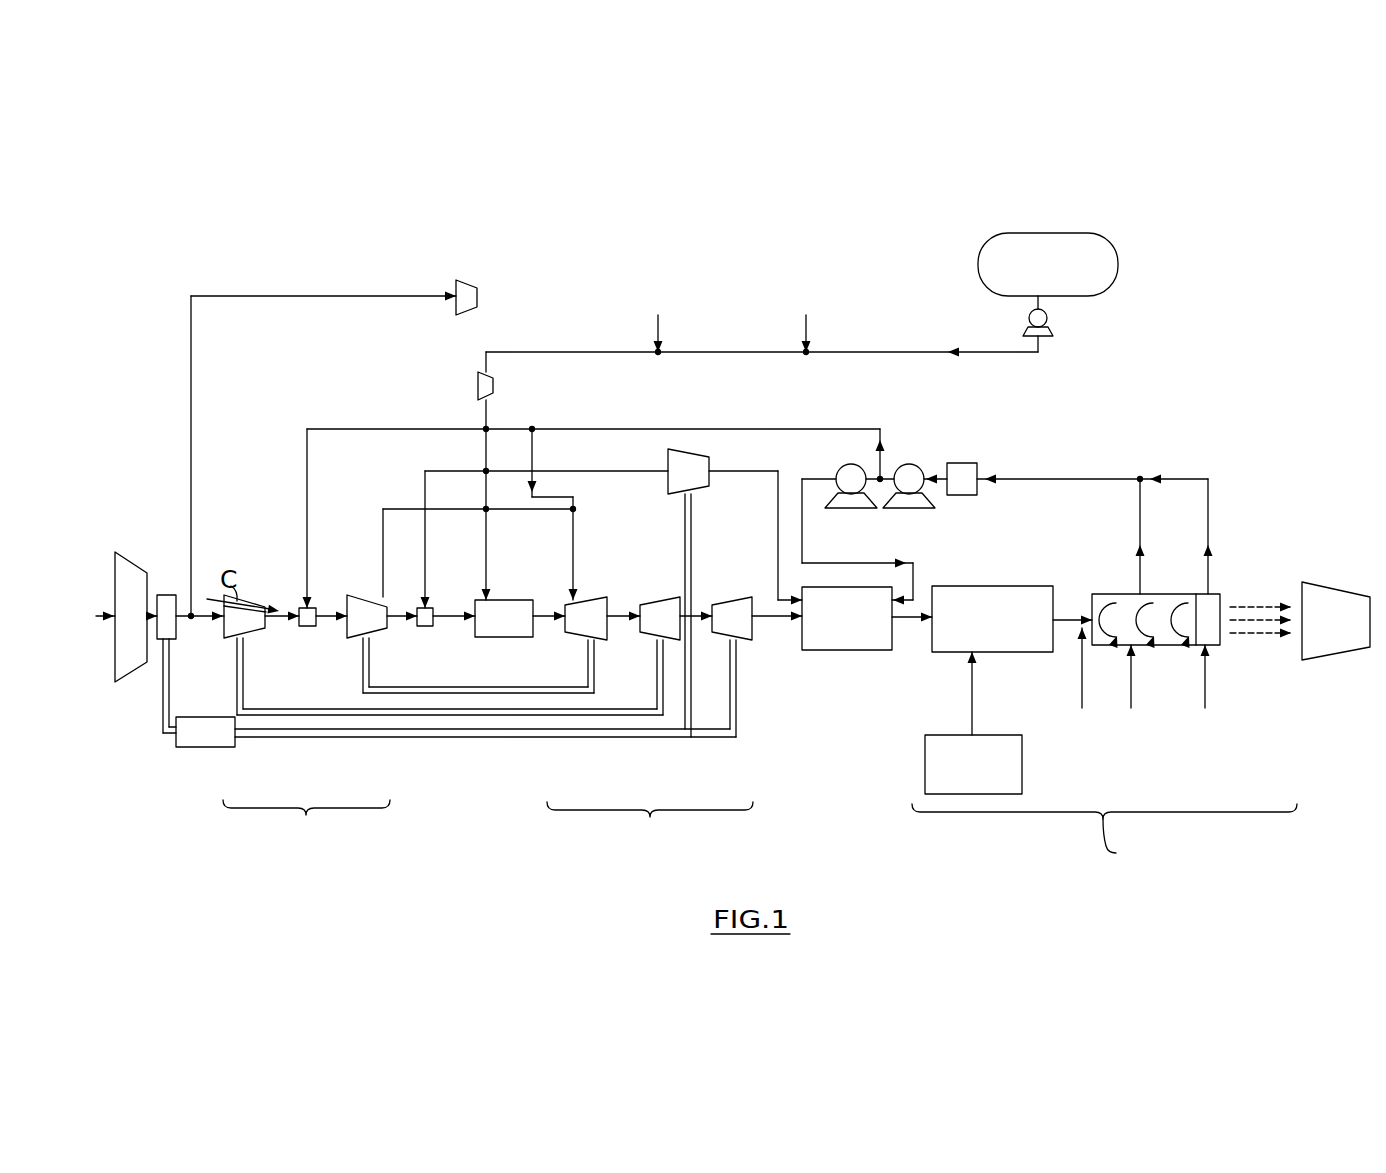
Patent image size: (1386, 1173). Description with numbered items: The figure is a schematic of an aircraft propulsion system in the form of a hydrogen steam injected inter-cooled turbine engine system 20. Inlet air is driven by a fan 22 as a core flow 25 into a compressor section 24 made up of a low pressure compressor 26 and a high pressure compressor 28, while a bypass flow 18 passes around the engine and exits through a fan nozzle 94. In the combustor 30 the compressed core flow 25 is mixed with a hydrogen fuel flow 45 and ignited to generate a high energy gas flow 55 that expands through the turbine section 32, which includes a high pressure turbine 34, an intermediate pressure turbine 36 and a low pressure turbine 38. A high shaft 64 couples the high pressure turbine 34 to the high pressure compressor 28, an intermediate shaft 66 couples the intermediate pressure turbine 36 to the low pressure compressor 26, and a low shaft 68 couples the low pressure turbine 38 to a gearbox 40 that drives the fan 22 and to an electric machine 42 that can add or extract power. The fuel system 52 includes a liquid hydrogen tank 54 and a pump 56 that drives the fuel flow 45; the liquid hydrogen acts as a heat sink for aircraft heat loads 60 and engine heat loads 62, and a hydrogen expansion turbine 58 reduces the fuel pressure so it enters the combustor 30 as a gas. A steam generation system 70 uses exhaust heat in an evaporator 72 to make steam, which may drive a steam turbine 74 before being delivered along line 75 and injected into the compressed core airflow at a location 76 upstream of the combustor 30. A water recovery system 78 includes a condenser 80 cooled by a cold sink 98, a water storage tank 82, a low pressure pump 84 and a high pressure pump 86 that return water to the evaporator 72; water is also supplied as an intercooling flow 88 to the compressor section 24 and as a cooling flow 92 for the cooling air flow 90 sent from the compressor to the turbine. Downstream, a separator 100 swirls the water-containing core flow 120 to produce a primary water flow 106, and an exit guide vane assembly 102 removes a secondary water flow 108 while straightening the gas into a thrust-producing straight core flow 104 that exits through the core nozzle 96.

The bypass flow 18 is at (193, 452).
The hydrogen steam injected inter-cooled turbine engine system 20 is at (190, 253).
The fan 22 is at (120, 668).
The compressor section 24 is at (306, 825).
The core flow 25 is at (292, 606).
The low pressure compressor 26 is at (262, 636).
The high pressure compressor 28 is at (383, 636).
The combustor 30 is at (505, 637).
The turbine section 32 is at (650, 827).
The high pressure turbine 34 is at (585, 641).
The intermediate pressure turbine 36 is at (648, 643).
The low pressure turbine 38 is at (737, 642).
The gearbox 40 is at (176, 628).
The electric machine 42 is at (233, 750).
The fuel flow 45 is at (487, 562).
The fuel system 52 is at (925, 292).
The liquid hydrogen tank 54 is at (1085, 290).
The high energy gas flow 55 is at (546, 603).
The pump 56 is at (1043, 340).
The hydrogen expansion turbine 58 is at (495, 386).
The aircraft heat loads 60 is at (805, 322).
The engine heat loads 62 is at (657, 322).
The high shaft 64 is at (437, 687).
The intermediate shaft 66 is at (428, 718).
The low shaft 68 is at (462, 738).
The steam generation system 70 is at (902, 543).
The evaporator 72 is at (840, 652).
The steam turbine 74 is at (702, 487).
The supply line 75 is at (425, 494).
The steam injection location 76 is at (428, 607).
The water recovery system 78 is at (1104, 838).
The condenser 80 is at (1018, 655).
The water storage tank 82 is at (960, 463).
The low pressure pump 84 is at (910, 466).
The high pressure pump 86 is at (848, 466).
The water intercooling flow 88 is at (652, 428).
The cooling air flow 90 is at (383, 548).
The cooling flow 92 is at (575, 553).
The fan nozzle 94 is at (470, 283).
The core nozzle 96 is at (1333, 596).
The cold sink 98 is at (1022, 768).
The separator 100 is at (1132, 707).
The exit guide vane assembly 102 is at (1205, 708).
The straight core flow 104 is at (1272, 655).
The primary water flow 106 is at (1137, 512).
The secondary water flow 108 is at (1210, 508).
The core flow 120 is at (1082, 708).